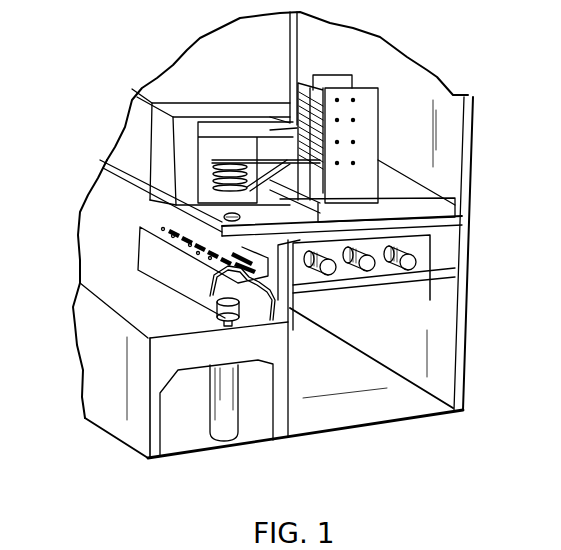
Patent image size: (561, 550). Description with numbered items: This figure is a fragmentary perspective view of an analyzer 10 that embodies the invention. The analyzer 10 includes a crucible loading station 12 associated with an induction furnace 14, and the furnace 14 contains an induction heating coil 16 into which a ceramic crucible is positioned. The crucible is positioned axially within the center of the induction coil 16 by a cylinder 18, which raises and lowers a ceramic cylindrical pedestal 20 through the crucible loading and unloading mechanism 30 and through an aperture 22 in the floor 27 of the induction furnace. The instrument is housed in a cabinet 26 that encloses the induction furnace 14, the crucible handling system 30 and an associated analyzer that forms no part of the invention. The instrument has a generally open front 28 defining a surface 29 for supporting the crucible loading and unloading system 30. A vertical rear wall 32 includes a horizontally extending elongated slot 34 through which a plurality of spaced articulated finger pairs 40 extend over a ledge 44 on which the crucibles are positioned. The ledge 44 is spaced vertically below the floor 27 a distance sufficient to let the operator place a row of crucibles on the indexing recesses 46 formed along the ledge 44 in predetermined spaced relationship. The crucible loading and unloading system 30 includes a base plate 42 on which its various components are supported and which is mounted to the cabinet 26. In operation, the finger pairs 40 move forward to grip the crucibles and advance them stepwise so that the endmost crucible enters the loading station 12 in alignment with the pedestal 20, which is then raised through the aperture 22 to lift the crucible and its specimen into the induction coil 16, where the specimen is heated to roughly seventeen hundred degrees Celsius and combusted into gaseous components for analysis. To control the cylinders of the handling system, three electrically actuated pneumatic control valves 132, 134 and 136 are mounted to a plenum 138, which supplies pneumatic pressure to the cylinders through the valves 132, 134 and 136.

The analyzer 10 is at (489, 124).
The crucible loading station 12 is at (244, 318).
The induction furnace 14 is at (372, 146).
The induction heating coil 16 is at (250, 160).
The cylinder 18 is at (238, 425).
The pedestal 20 is at (210, 298).
The aperture 22 is at (241, 216).
The cabinet 26 is at (472, 207).
The floor 27 is at (122, 182).
The open front 28 is at (98, 263).
The surface 29 is at (120, 290).
The crucible loading and unloading system 30 is at (178, 282).
The vertical rear wall 32 is at (292, 296).
The elongated slot 34 is at (277, 300).
The articulated finger pairs 40 is at (170, 230).
The base plate 42 is at (420, 287).
The ledge 44 is at (142, 231).
The indexing recesses 46 is at (210, 258).
The pneumatic control valve 132 is at (332, 272).
The pneumatic control valve 134 is at (372, 271).
The pneumatic control valve 136 is at (412, 260).
The plenum 138 is at (433, 268).